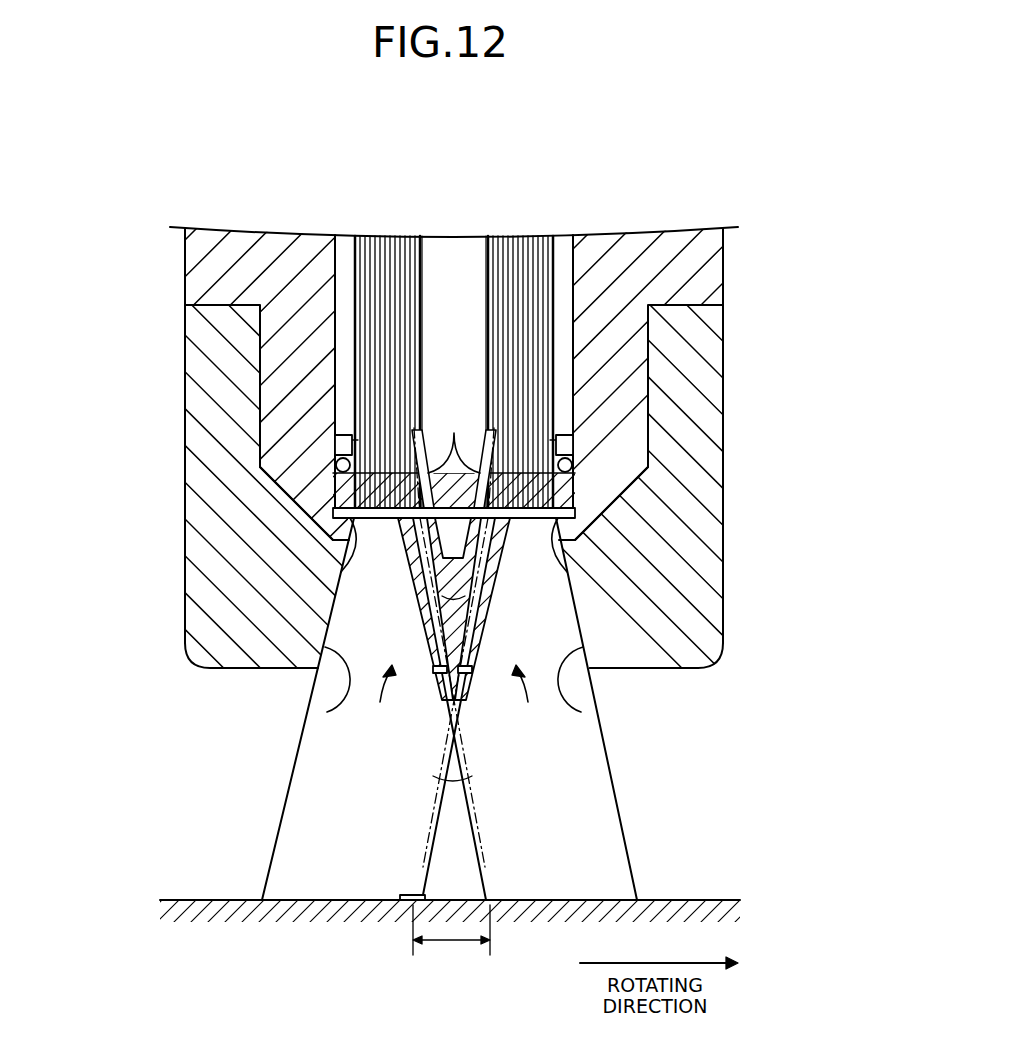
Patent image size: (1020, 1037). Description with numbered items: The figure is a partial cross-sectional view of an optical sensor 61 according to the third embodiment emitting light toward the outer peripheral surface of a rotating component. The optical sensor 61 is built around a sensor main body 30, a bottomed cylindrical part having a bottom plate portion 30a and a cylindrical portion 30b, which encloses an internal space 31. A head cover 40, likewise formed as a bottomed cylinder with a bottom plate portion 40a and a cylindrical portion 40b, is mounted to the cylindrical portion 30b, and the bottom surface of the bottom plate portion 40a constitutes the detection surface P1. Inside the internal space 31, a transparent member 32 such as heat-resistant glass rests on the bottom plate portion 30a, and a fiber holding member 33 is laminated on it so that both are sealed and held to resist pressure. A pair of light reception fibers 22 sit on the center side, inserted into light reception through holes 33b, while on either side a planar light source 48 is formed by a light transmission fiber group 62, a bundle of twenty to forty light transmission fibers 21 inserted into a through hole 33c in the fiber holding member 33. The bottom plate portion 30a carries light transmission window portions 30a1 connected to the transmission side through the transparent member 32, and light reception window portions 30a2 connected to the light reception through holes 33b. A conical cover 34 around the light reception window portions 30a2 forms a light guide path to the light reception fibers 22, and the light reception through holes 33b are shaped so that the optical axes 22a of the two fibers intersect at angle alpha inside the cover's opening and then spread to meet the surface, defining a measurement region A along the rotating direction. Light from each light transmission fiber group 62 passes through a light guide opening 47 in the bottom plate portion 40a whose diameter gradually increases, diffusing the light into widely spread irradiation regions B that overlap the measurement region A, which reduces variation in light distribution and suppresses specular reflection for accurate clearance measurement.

The optical sensor 61 is at (765, 199).
The light transmission fiber group 62 is at (350, 245).
The light transmission fiber 21 is at (452, 341).
The light reception fiber 22 is at (425, 247).
The optical axis 22a is at (352, 438).
The internal space 31 is at (440, 309).
The fiber holding member 33 is at (372, 488).
The light reception through hole 33b is at (454, 434).
The through hole 33c is at (340, 446).
The transparent member 32 is at (372, 512).
The sensor main body 30 is at (510, 518).
The bottom plate portion 30a is at (580, 523).
The cylindrical portion 30b is at (610, 470).
The light transmission window portion 30a1 is at (348, 566).
The light reception window portion 30a2 is at (352, 582).
The conical cover 34 is at (497, 585).
The head cover 40 is at (510, 518).
The bottom plate portion 40a is at (227, 660).
The cylindrical portion 40b is at (193, 617).
The light guide opening 47 is at (327, 712).
The planar light source 48 is at (453, 708).
The detection surface P1 is at (678, 670).
The irradiation region B is at (273, 855).
The measurement region A is at (522, 518).